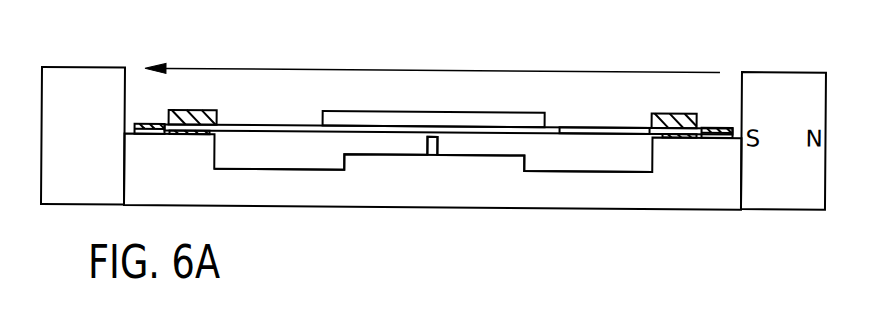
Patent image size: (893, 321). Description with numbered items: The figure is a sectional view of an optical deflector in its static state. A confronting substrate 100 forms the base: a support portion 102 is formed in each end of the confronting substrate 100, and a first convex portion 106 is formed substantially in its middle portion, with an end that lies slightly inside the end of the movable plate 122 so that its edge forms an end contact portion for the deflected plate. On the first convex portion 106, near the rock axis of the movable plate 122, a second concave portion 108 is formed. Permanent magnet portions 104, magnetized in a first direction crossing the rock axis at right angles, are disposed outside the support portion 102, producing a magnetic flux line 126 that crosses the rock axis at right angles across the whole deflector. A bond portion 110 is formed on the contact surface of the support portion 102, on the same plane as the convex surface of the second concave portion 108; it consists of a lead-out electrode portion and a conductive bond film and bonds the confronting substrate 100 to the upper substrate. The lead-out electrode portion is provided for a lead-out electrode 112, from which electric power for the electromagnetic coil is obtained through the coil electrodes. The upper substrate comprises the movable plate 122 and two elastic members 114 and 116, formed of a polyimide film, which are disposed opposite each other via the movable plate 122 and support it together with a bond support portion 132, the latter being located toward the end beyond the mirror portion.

The confronting substrate 100 is at (657, 205).
The support portion 102 is at (182, 142).
The permanent magnet portions 104 is at (82, 85).
The first convex portion 106 is at (371, 167).
The second concave portion 108 is at (439, 142).
The bond portion 110 is at (680, 109).
The lead-out electrode 112 is at (722, 123).
The elastic member 114 is at (267, 123).
The elastic member 116 is at (580, 123).
The movable plate 122 is at (420, 109).
The magnetic flux line 126 is at (337, 66).
The bond support portion 132 is at (655, 109).